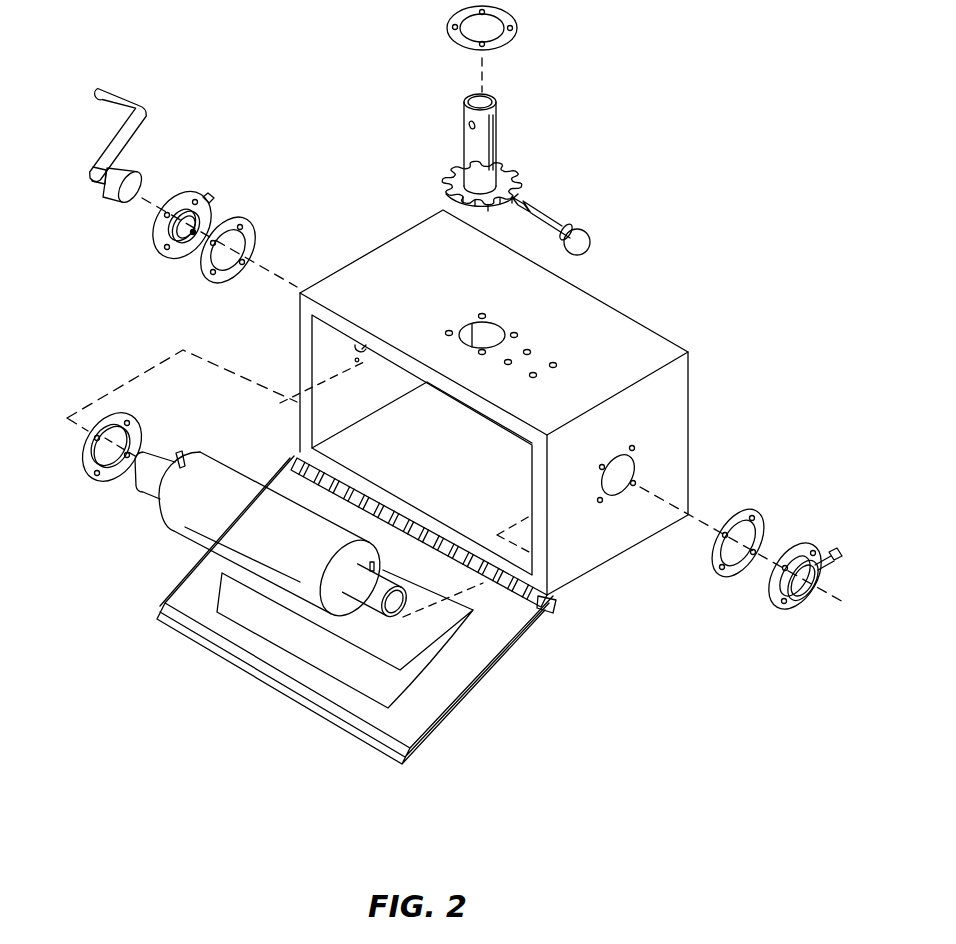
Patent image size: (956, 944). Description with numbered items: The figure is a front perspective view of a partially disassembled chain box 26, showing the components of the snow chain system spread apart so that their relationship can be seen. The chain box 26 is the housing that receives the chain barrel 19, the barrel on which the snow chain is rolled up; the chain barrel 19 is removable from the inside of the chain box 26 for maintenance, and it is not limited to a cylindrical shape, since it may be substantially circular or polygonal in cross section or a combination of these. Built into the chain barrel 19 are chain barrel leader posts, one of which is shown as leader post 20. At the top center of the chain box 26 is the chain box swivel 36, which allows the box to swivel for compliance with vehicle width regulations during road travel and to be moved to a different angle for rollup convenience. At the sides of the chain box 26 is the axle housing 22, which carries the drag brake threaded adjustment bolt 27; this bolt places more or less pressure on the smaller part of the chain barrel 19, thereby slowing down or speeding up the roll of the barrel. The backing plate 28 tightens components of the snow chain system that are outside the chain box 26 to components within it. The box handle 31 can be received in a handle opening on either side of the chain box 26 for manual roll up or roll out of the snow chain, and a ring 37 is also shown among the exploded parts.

The chain barrel 19 is at (205, 515).
The chain barrel leader post 20 is at (470, 612).
The axle housing 22 is at (797, 545).
The chain box 26 is at (425, 245).
The drag brake threaded adjustment bolt 27 is at (832, 552).
The backing plate 28 is at (80, 453).
The box handle 31 is at (123, 100).
The chain box swivel 36 is at (498, 132).
The ring 37 is at (738, 580).